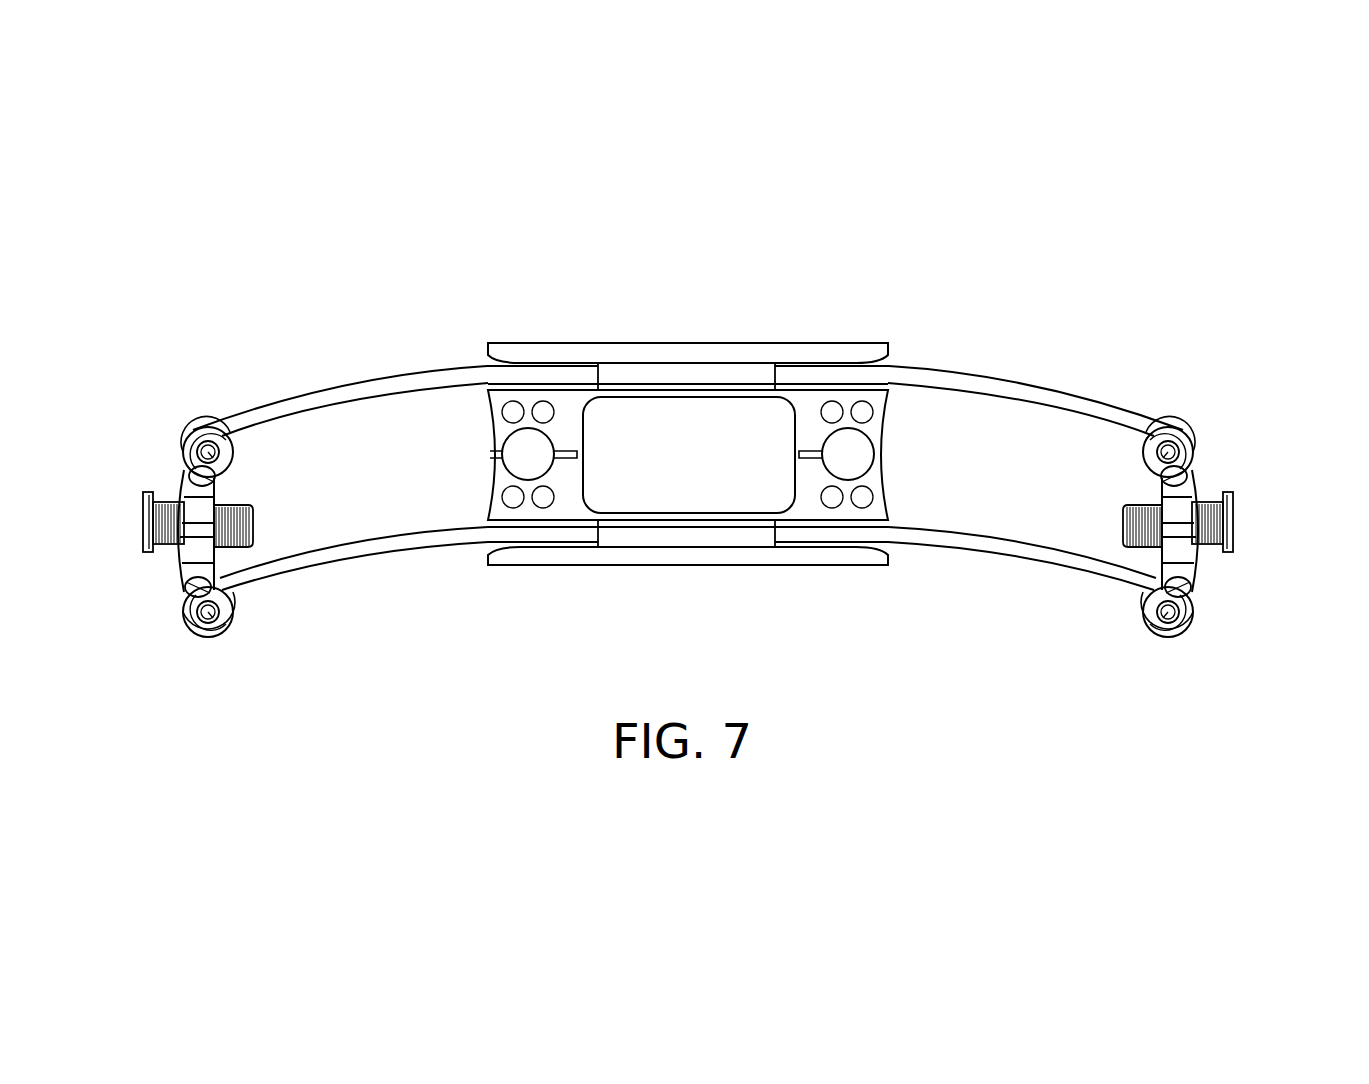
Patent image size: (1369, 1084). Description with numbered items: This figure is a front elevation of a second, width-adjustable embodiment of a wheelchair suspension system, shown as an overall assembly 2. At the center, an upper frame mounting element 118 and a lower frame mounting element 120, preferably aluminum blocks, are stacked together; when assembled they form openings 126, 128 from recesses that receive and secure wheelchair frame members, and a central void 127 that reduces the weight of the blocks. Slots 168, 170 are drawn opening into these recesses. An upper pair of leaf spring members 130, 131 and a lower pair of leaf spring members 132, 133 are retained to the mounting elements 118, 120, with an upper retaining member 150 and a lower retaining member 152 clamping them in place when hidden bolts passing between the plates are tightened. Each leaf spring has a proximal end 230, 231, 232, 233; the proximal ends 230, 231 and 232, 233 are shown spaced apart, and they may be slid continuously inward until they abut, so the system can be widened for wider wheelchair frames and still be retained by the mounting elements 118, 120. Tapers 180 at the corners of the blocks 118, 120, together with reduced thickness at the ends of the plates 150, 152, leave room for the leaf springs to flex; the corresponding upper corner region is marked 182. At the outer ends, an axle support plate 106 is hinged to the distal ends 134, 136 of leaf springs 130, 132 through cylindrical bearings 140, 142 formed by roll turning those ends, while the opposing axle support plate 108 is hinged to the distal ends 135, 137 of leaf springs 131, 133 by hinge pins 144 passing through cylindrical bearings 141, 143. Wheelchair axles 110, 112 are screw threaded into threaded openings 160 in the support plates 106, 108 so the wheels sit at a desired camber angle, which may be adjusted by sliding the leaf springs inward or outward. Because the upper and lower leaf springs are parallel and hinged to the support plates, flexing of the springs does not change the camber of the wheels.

The headband assembly 2 is at (1107, 345).
The axle support plate 106 is at (174, 570).
The axle support plate 108 is at (1202, 557).
The wheelchair axle 110 is at (143, 508).
The wheelchair axle 112 is at (1238, 520).
The frame mounting element 118 is at (572, 403).
The frame mounting element 120 is at (805, 510).
The opening 126 is at (522, 462).
The central void 127 is at (673, 435).
The opening 128 is at (848, 447).
The leaf spring member 130 is at (398, 377).
The leaf spring member 131 is at (960, 372).
The leaf spring member 132 is at (403, 557).
The leaf spring member 133 is at (977, 553).
The distal end 134 is at (238, 413).
The distal end 135 is at (1150, 418).
The distal end 136 is at (233, 590).
The distal end 137 is at (1133, 588).
The cylindrical bearing 140 is at (192, 437).
The cylindrical bearing 141 is at (1192, 438).
The cylindrical bearing 142 is at (190, 630).
The cylindrical bearing 143 is at (1168, 640).
The hinge pin 144 is at (212, 456).
The upper retaining member 150 is at (750, 342).
The lower retaining member 152 is at (655, 567).
The threaded opening 160 is at (213, 548).
The left slot 168 is at (495, 455).
The inner slot 170 is at (572, 450).
The taper 180 is at (882, 522).
The upper right arm end portion 182 is at (903, 370).
The proximal end 230 is at (602, 367).
The proximal end 231 is at (775, 373).
The proximal end 232 is at (598, 530).
The proximal end 233 is at (775, 530).